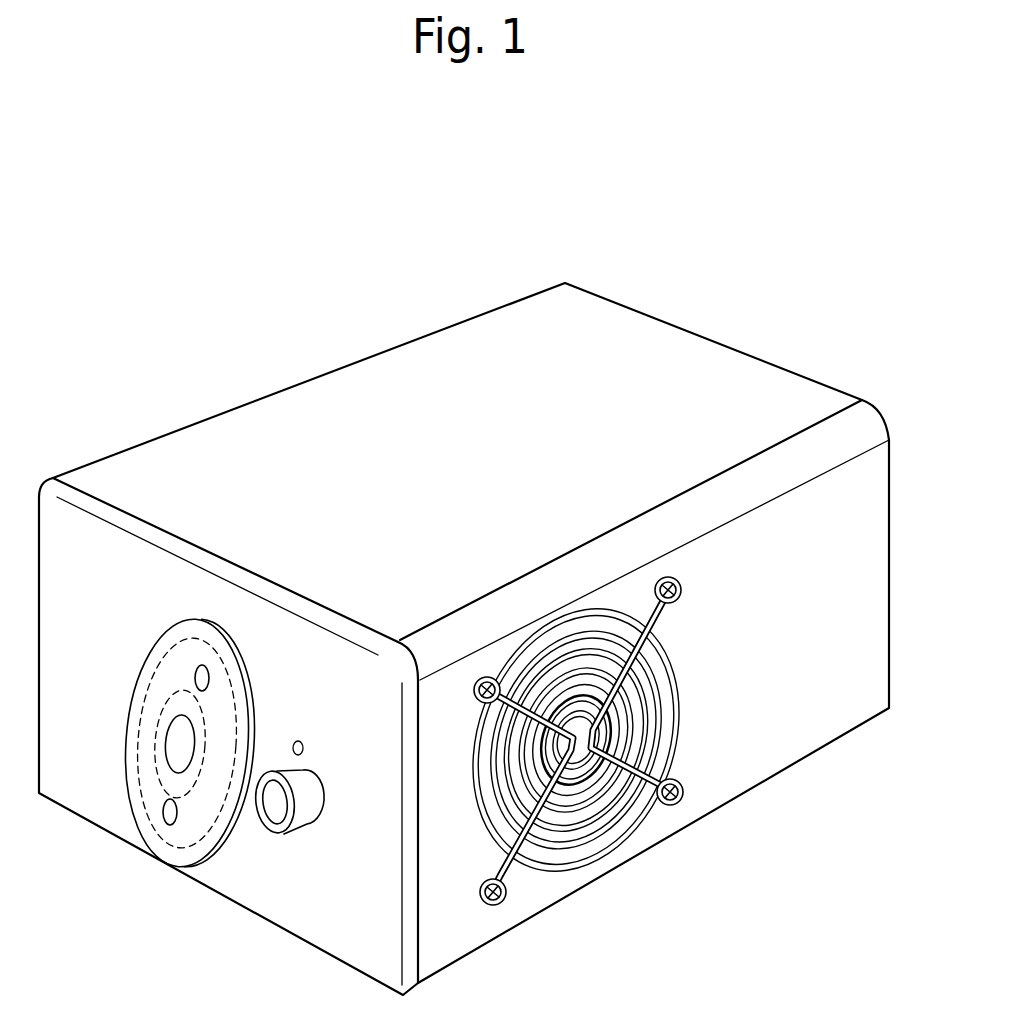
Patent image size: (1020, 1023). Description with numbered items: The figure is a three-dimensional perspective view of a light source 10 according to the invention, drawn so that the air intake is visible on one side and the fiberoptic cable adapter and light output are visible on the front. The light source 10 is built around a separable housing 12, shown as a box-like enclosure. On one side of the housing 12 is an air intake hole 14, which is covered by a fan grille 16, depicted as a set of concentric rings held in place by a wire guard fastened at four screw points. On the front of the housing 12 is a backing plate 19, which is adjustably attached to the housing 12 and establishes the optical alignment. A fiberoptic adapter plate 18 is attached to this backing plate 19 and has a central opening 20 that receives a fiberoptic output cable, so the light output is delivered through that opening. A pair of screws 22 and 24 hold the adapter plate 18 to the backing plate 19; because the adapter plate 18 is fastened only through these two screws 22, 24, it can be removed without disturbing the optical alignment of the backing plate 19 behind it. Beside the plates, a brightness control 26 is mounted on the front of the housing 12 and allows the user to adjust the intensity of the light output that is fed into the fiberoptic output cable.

The light source 10 is at (464, 560).
The separable housing 12 is at (715, 340).
The air intake hole 14 is at (672, 638).
The fan grille 16 is at (660, 703).
The fiberoptic adapter plate 18 is at (227, 702).
The backing plate 19 is at (138, 694).
The central opening 20 is at (167, 743).
The screw 22 is at (200, 665).
The screw 24 is at (175, 820).
The brightness control 26 is at (305, 790).